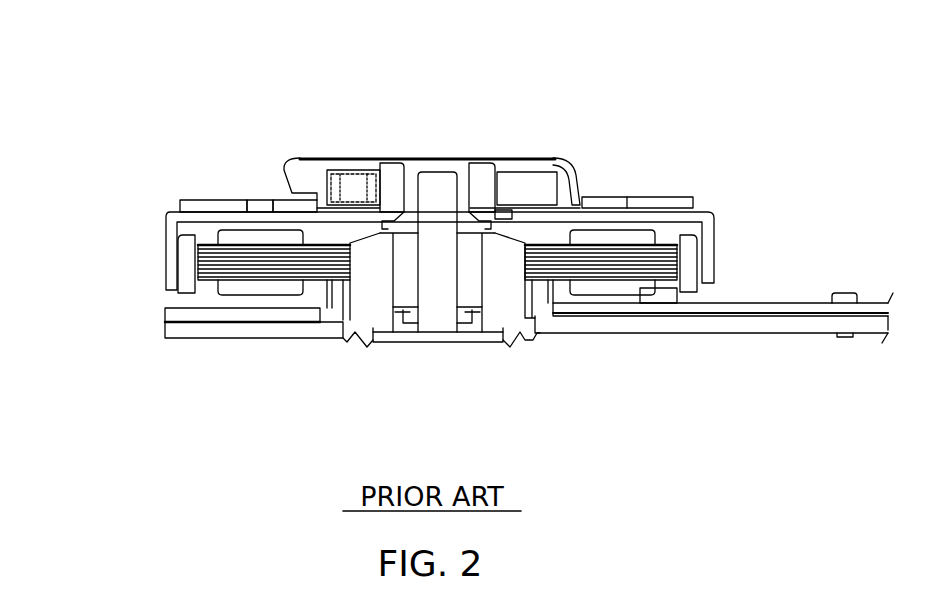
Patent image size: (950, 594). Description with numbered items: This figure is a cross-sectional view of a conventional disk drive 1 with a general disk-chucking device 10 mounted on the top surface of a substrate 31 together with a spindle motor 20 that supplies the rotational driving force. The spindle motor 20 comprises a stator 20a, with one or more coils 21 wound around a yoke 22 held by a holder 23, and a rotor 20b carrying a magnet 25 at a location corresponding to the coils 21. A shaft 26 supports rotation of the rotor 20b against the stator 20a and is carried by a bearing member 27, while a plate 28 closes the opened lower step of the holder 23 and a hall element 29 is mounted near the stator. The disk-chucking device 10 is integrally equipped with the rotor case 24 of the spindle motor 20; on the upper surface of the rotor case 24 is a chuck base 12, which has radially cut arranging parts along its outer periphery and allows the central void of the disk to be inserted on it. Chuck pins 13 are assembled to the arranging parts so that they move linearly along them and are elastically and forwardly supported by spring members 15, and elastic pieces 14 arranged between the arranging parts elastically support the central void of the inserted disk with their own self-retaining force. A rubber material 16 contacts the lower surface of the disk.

The disk drive 1 is at (754, 98).
The disk-chucking device 10 is at (262, 136).
The chuck base 12 is at (487, 157).
The chuck pins 13 is at (296, 183).
The elastic pieces 14 is at (574, 184).
The spring members 15 is at (337, 158).
The rubber material 16 is at (655, 199).
The spindle motor 20 is at (118, 343).
The stator 20a is at (342, 402).
The rotor 20b is at (86, 200).
The coils 21 is at (216, 267).
The yoke 22 is at (257, 290).
The holder 23 is at (340, 300).
The rotor case 24 is at (167, 213).
The magnet 25 is at (166, 268).
The shaft 26 is at (447, 300).
The bearing member 27 is at (413, 297).
The plate 28 is at (487, 337).
The hall element 29 is at (657, 298).
The substrate 31 is at (800, 313).